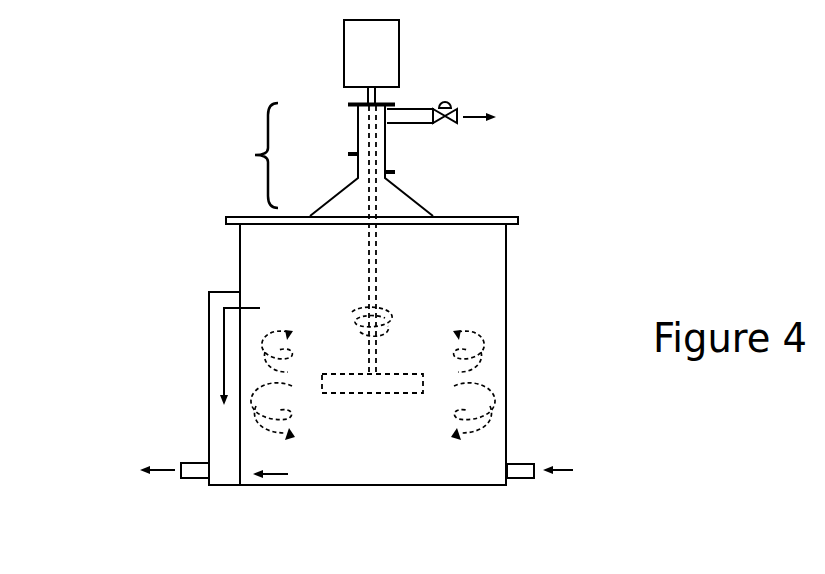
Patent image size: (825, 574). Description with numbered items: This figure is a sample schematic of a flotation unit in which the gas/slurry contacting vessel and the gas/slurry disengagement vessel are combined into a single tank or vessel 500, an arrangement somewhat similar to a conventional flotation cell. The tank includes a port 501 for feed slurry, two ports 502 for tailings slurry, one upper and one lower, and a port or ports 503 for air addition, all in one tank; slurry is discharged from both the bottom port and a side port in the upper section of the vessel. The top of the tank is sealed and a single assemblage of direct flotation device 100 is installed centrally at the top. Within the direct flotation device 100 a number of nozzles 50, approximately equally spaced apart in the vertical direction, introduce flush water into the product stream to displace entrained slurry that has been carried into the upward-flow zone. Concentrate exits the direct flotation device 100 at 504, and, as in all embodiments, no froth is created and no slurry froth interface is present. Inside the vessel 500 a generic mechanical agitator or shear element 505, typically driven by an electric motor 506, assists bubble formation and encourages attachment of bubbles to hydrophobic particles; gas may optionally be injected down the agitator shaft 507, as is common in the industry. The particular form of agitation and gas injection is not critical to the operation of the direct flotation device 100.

The single tank or vessel 500 is at (514, 270).
The port for feed slurry 501 is at (573, 470).
The ports for tailings slurry 502 is at (238, 300).
The port or ports for air addition 503 is at (496, 454).
The concentrate exit 504 is at (476, 117).
The mechanical agitator or shear element 505 is at (383, 393).
The electric motor 506 is at (344, 62).
The agitator shaft 507 is at (368, 272).
The nozzles 50 is at (352, 152).
The direct flotation device 100 is at (317, 159).